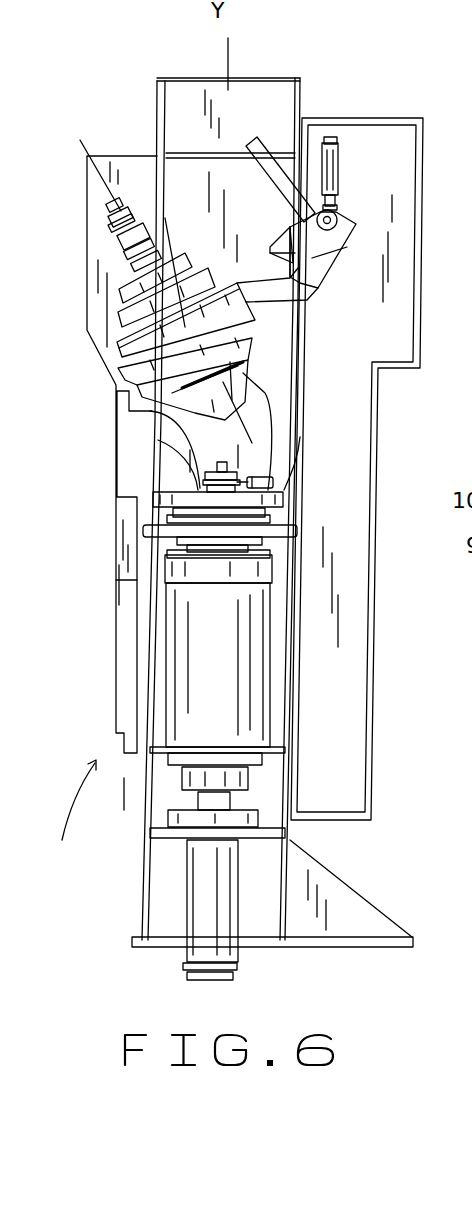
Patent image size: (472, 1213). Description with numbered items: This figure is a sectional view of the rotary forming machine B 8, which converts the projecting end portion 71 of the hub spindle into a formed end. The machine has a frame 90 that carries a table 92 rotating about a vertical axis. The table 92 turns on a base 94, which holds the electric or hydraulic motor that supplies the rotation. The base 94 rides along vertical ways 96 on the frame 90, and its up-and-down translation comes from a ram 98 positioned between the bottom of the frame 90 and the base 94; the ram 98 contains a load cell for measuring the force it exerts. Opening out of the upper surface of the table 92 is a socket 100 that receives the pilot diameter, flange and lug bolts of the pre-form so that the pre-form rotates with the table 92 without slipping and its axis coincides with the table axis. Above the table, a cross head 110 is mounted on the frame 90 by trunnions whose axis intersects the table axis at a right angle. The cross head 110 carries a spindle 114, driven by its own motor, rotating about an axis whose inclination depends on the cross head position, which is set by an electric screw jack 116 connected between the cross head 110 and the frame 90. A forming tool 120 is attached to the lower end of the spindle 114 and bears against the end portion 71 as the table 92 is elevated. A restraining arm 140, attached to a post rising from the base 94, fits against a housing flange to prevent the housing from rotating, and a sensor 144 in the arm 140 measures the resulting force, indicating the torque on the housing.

The view direction arrow 8 is at (73, 810).
The end portion 71 is at (128, 405).
The frame 90 is at (302, 90).
The table 92 is at (165, 492).
The base 94 is at (197, 697).
The vertical ways 96 is at (150, 641).
The ram 98 is at (207, 910).
The socket 100 is at (152, 442).
The cross head 110 is at (110, 373).
The spindle 114 is at (123, 246).
The electric screw jack 116 is at (340, 163).
The forming tool 120 is at (249, 402).
The restraining arm 140 is at (283, 480).
The sensor 144 is at (290, 498).